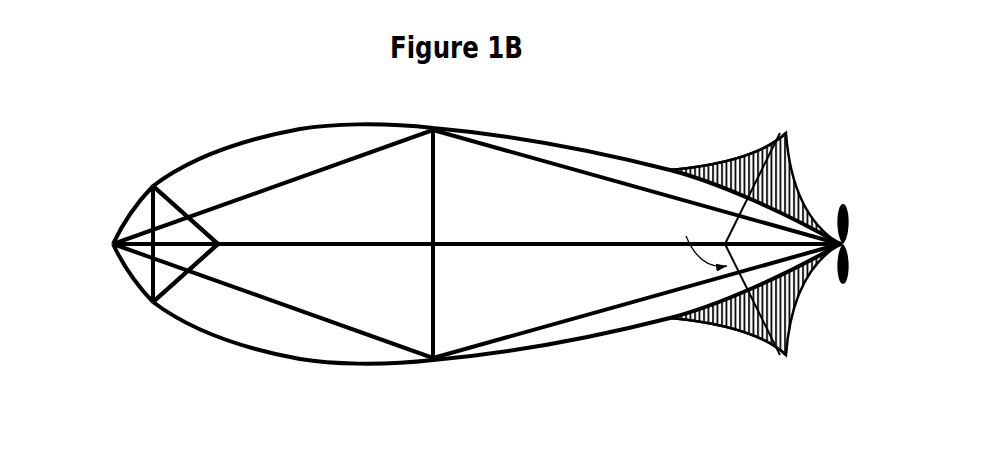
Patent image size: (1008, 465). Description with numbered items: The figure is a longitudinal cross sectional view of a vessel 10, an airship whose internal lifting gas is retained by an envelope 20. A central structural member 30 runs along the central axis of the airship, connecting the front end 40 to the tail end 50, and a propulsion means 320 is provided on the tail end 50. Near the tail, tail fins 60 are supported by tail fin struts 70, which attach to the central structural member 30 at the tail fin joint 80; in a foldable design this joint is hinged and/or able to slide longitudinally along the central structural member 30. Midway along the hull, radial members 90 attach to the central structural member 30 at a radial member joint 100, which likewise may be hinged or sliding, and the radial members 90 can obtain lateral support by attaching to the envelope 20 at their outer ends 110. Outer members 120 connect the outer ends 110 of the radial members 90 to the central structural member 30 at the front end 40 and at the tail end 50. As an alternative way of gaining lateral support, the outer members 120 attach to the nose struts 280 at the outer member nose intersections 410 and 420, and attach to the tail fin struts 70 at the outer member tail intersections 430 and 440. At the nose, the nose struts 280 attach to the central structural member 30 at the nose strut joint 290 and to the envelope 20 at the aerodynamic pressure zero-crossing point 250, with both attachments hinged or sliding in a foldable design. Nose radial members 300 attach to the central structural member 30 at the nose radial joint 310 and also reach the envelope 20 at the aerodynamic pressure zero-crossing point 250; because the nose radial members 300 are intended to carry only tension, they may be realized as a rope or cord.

The vessel 10 is at (573, 354).
The envelope 20 is at (466, 362).
The central structural member 30 is at (585, 240).
The front end 40 is at (106, 247).
The tail end 50 is at (829, 219).
The tail fins 60 is at (712, 153).
The tail fin struts 70 is at (731, 227).
The tail fin joint 80 is at (718, 252).
The radial members 90 is at (437, 200).
The radial member joint 100 is at (438, 248).
The outer ends 110 is at (429, 352).
The outer members 120 is at (352, 155).
The aerodynamic pressure zero-crossing point 250 is at (152, 182).
The nose struts 280 is at (180, 207).
The nose strut joint 290 is at (223, 241).
The nose radial members 300 is at (148, 213).
The nose radial joint 310 is at (161, 250).
The propulsion means 320 is at (838, 291).
The outer member nose intersection 410 is at (195, 213).
The outer member nose intersection 420 is at (193, 278).
The outer member tail intersection 430 is at (740, 206).
The outer member tail intersection 440 is at (724, 334).